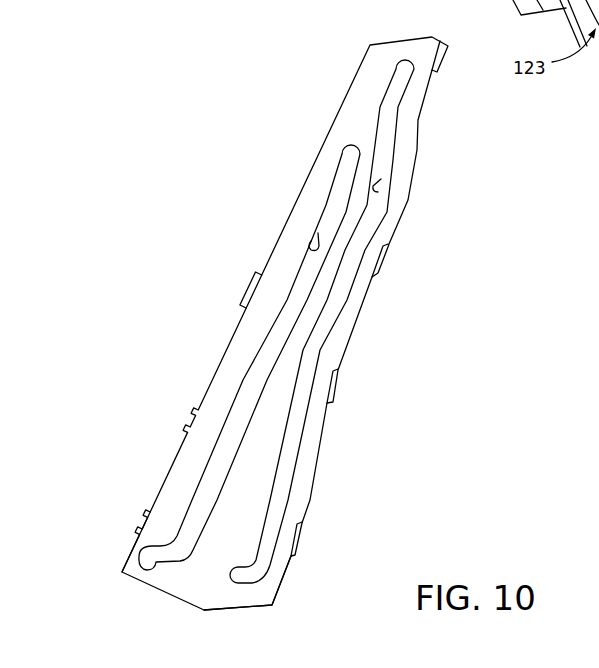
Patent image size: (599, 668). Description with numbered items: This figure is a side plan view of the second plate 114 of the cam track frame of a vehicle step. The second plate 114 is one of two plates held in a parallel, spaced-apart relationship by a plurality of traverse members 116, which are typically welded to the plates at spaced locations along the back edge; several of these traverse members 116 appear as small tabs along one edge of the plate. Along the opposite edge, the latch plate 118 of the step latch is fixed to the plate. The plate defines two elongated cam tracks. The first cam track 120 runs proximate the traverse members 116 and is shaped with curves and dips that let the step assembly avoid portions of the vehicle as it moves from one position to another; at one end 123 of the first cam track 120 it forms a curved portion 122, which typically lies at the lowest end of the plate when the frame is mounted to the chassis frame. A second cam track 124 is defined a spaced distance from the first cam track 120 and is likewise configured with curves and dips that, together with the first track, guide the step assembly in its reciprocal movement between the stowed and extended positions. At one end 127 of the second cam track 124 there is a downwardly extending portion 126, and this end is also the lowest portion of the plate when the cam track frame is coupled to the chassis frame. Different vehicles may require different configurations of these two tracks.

The second plate 114 is at (350, 80).
The traverse members 116 is at (448, 58).
The latch plate 118 is at (245, 290).
The first cam track 120 is at (381, 179).
The curved portion 122 is at (254, 597).
The end of the first cam track 123 is at (310, 592).
The second cam track 124 is at (318, 233).
The downwardly extending portion 126 is at (150, 586).
The end of the second cam track 127 is at (117, 553).